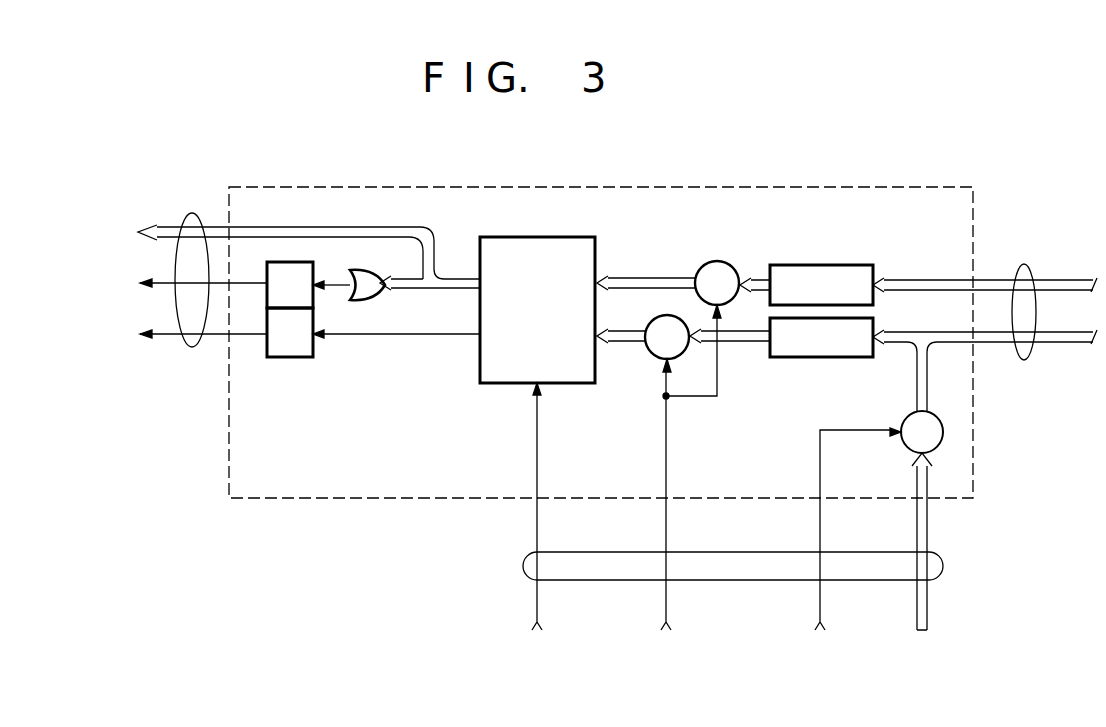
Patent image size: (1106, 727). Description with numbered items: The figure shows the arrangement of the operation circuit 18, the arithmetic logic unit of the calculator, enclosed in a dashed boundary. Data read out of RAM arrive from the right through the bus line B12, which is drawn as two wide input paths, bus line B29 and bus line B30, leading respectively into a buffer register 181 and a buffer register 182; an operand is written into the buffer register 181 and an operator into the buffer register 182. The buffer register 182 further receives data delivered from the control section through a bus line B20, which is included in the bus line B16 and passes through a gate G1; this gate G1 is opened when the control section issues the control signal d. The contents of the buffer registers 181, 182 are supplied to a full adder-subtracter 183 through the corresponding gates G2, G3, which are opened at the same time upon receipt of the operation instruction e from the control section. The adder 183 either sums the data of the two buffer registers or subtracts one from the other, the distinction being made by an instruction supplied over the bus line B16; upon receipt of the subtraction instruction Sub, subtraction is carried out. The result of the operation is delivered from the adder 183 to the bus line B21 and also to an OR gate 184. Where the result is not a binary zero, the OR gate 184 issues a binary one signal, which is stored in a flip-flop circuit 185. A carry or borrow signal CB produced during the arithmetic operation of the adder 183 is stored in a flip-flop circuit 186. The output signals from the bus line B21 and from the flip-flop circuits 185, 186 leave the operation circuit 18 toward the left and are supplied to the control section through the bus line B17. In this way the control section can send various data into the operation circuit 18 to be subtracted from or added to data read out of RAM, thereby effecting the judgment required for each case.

The operation circuit 18 is at (858, 187).
The buffer register 181 is at (849, 265).
The buffer register 182 is at (848, 357).
The full adder-subtracter 183 is at (548, 248).
The OR gate 184 is at (356, 300).
The flip-flop circuit 185 is at (288, 262).
The flip-flop circuit 186 is at (292, 358).
The bus line B12 is at (1024, 263).
The bus line B16 is at (765, 568).
The bus line B17 is at (192, 347).
The bus line B20 is at (928, 524).
The bus line B21 is at (440, 291).
The bus line B29 is at (1069, 293).
The bus line B30 is at (1069, 346).
The gate G1 is at (922, 432).
The gate G2 is at (668, 283).
The gate G3 is at (643, 337).
The carry or borrow signal CB is at (396, 346).
The subtraction instruction Sub is at (541, 521).
The operation instruction e is at (689, 482).
The control signal d is at (856, 545).